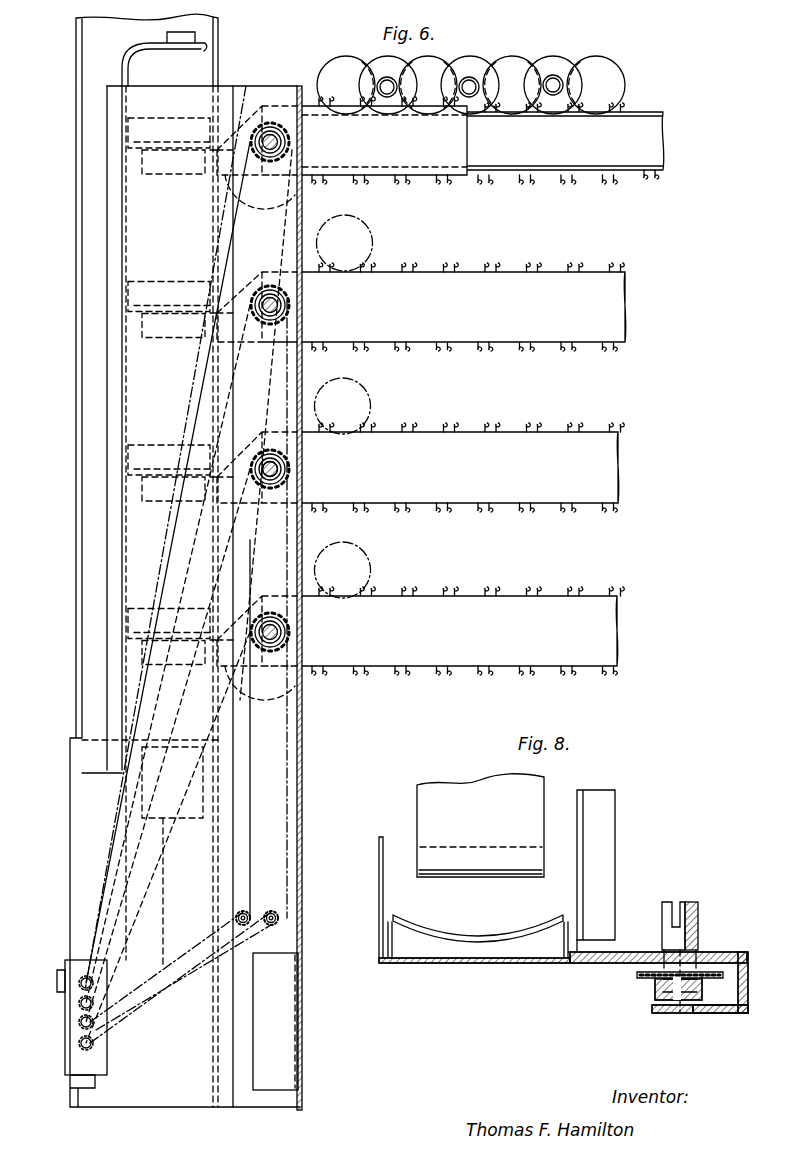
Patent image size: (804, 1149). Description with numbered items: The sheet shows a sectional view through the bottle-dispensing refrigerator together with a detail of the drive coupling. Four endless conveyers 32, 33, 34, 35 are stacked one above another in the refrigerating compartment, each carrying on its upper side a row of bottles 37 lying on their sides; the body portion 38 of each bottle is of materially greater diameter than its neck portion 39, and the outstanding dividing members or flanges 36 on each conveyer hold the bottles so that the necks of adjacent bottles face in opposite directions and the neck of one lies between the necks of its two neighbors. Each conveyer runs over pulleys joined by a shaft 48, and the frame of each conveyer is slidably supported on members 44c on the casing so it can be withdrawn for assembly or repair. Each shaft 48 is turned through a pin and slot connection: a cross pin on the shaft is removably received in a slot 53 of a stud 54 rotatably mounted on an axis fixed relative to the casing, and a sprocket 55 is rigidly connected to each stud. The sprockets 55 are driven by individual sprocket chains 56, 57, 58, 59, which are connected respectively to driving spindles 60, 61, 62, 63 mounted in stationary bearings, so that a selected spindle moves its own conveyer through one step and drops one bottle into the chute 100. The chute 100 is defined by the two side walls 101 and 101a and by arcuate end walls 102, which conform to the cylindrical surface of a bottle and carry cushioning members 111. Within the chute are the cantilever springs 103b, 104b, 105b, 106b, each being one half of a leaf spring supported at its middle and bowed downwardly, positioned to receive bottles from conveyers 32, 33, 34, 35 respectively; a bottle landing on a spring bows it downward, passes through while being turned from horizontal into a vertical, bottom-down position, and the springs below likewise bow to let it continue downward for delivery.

In FIG. 6, the endless conveyer 32 is at (650, 112).
In FIG. 6, the endless conveyer 33 is at (588, 272).
In FIG. 6, the endless conveyer 34 is at (595, 432).
In FIG. 6, the endless conveyer 35 is at (592, 596).
In FIG. 6, the dividing members or flanges 36 is at (625, 100).
In FIG. 6, the bottles 37 is at (570, 58).
In FIG. 6, the body portion 38 is at (335, 62).
In FIG. 6, the neck portion 39 is at (384, 77).
In FIG. 6, the members 44c is at (285, 207).
In FIG. 6, the shaft 48 is at (272, 469).
In FIG. 8, the slot 53 is at (679, 900).
In FIG. 8, the stud 54 is at (693, 925).
In FIG. 6, the sprocket 55 is at (268, 150).
In FIG. 8, the sprocket 55 is at (640, 976).
In FIG. 6, the sprocket chain 56 is at (196, 398).
In FIG. 6, the sprocket chain 57 is at (264, 405).
In FIG. 6, the sprocket chain 58 is at (289, 536).
In FIG. 6, the sprocket chain 59 is at (289, 724).
In FIG. 6, the spindle 60 is at (78, 983).
In FIG. 6, the spindle 61 is at (78, 1005).
In FIG. 6, the spindle 62 is at (78, 1026).
In FIG. 6, the spindle 63 is at (78, 1047).
In FIG. 6, the chute 100 is at (123, 233).
In FIG. 6, the side wall 101 is at (126, 196).
In FIG. 6, the side wall 101a is at (215, 236).
In FIG. 8, the end wall 102 is at (480, 942).
In FIG. 6, the cantilever spring 103b is at (140, 168).
In FIG. 8, the cantilever spring 103b is at (417, 812).
In FIG. 6, the cantilever spring 104b is at (146, 338).
In FIG. 6, the cantilever spring 105b is at (144, 500).
In FIG. 6, the cantilever spring 106b is at (142, 655).
In FIG. 8, the cushioning members 111 is at (474, 934).